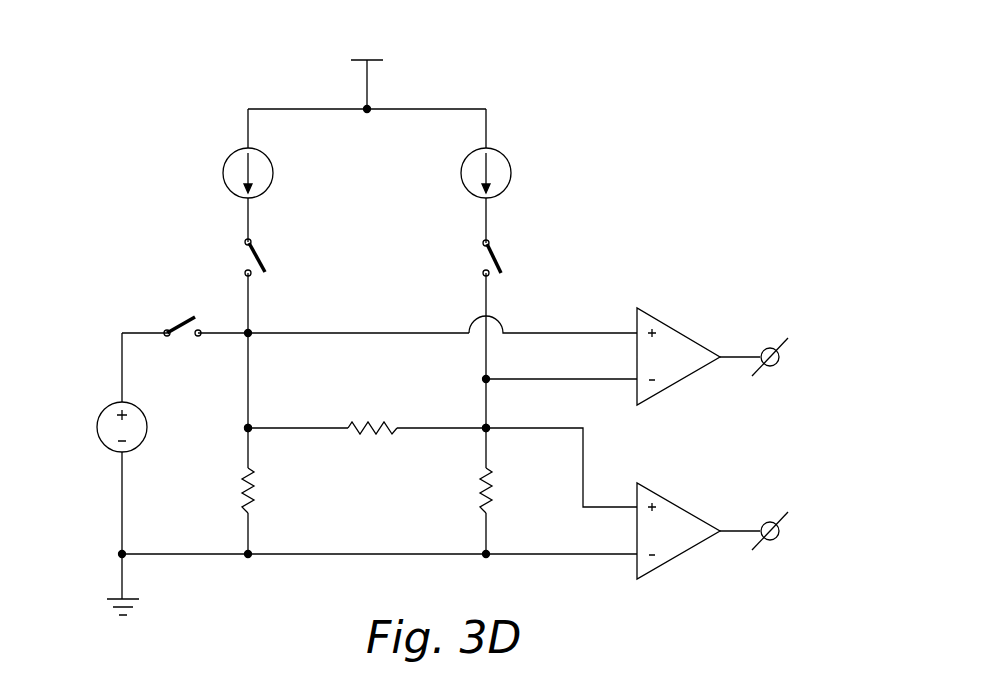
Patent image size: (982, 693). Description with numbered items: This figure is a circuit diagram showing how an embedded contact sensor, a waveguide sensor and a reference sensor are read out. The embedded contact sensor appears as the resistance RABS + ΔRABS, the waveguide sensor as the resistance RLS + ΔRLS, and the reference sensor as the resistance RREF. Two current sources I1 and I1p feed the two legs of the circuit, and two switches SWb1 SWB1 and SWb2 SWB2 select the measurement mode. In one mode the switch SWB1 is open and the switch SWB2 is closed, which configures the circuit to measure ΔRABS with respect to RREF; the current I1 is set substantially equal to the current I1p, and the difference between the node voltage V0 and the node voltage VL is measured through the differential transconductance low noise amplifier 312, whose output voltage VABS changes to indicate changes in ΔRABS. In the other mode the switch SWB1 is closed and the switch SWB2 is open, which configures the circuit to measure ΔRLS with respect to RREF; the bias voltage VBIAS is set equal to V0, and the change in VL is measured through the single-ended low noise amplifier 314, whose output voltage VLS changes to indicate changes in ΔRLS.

The differential transconductance low noise amplifier 312 is at (677, 329).
The single-ended low noise amplifier 314 is at (677, 503).
The current source I1 is at (234, 173).
The current source I'1 I1p is at (471, 173).
The switch SWb1 SWB1 is at (183, 308).
The switch SWb2 SWB2 is at (258, 253).
The bias voltage VBias VBIAS is at (91, 427).
The voltage V0 is at (232, 431).
The voltage VL is at (500, 446).
The waveguide sensor resistance RLS + Δ RLS is at (365, 414).
The ECS resistance RABS + Δ RABS is at (320, 490).
The reference sensor resistance RREF is at (511, 490).
The output voltage VABS is at (795, 357).
The output voltage VLS is at (789, 531).